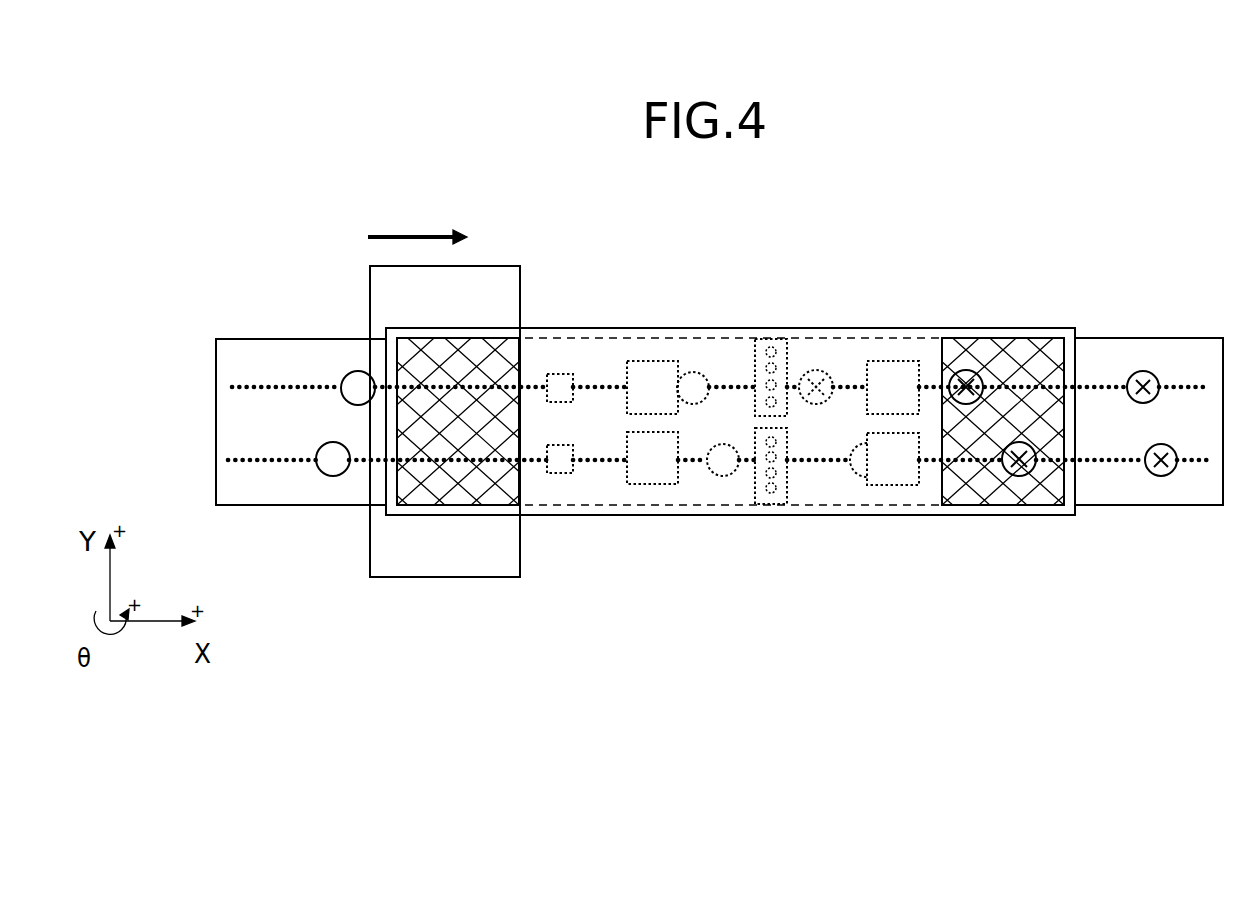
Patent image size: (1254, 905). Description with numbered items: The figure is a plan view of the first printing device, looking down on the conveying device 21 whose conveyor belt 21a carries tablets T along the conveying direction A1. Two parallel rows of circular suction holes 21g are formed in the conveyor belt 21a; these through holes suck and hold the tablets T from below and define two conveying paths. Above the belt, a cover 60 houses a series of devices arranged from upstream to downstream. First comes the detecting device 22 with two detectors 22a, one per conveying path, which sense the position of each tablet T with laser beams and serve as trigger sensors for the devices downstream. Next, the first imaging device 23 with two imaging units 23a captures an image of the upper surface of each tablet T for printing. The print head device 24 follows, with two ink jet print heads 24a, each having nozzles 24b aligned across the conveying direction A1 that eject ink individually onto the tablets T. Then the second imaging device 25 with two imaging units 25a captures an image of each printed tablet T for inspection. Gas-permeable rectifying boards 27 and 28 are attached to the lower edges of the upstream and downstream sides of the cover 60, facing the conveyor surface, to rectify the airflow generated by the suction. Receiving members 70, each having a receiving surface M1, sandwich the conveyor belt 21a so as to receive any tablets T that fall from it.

The conveying device 21 is at (253, 286).
The conveyor belt 21a is at (276, 343).
The suction holes 21g is at (245, 387).
The tablet T is at (360, 369).
The conveying direction A1 is at (408, 234).
The receiving surface M1 is at (483, 272).
The receiving members 70 is at (500, 266).
The cover 60 is at (532, 515).
The rectifying board 27 is at (448, 512).
The rectifying board 28 is at (1003, 512).
The detecting device 22 is at (589, 371).
The detectors 22a is at (558, 372).
The first imaging device 23 is at (683, 371).
The imaging units 23a is at (652, 360).
The print head device 24 is at (808, 375).
The ink jet print heads 24a is at (770, 339).
The nozzles 24b is at (778, 368).
The second imaging device 25 is at (907, 371).
The imaging units 25a is at (893, 360).